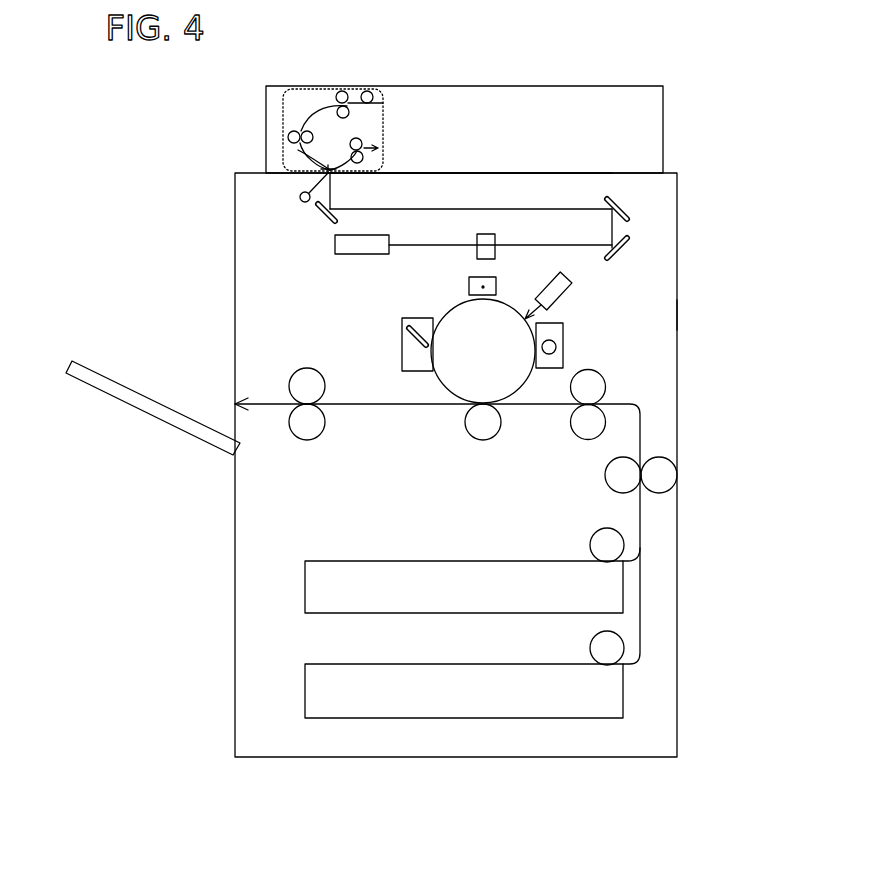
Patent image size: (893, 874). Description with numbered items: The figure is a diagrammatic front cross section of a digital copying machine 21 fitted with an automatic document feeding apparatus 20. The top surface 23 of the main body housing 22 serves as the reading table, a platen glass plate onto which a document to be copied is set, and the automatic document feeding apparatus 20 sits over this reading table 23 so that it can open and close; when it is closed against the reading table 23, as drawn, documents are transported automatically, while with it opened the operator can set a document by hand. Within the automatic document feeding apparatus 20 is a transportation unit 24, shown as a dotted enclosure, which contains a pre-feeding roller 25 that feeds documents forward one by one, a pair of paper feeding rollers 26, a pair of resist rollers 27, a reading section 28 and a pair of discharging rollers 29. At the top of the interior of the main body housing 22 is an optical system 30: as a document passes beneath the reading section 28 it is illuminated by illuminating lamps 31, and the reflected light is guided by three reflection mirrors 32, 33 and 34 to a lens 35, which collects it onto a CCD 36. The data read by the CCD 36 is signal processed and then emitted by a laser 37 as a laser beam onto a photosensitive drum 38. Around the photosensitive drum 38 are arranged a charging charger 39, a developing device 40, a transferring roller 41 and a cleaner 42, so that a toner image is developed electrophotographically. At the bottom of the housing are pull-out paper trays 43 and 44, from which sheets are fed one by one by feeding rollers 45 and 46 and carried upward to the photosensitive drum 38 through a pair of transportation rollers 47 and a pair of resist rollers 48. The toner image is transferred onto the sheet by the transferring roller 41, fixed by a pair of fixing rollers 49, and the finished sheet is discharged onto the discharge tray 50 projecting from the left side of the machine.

The automatic document feeding apparatus 20 is at (530, 86).
The digital copying machine 21 is at (690, 197).
The main body housing 22 is at (677, 310).
The top surface (reading table) 23 is at (552, 173).
The transportation unit 24 is at (303, 85).
The pre-feeding roller 25 is at (368, 91).
The paper feeding rollers 26 is at (348, 104).
The resist rollers 27 is at (292, 132).
The reading section 28 is at (298, 150).
The discharging rollers 29 is at (362, 143).
The optical system 30 is at (313, 237).
The illuminating lamps 31 is at (300, 197).
The reflection mirror 32 is at (320, 218).
The reflection mirror 33 is at (624, 204).
The reflection mirror 34 is at (625, 256).
The lens 35 is at (487, 240).
The CCD 36 is at (380, 235).
The laser 37 is at (567, 297).
The photosensitive drum 38 is at (442, 388).
The charging charger 39 is at (469, 287).
The developing device 40 is at (563, 345).
The transferring roller 41 is at (484, 440).
The cleaner 42 is at (402, 342).
The paper tray 43 is at (410, 565).
The paper tray 44 is at (407, 670).
The feeding roller 45 is at (590, 543).
The feeding roller 46 is at (590, 648).
The transportation rollers 47 is at (620, 460).
The resist rollers 48 is at (600, 421).
The fixing rollers 49 is at (320, 390).
The discharge tray 50 is at (157, 417).